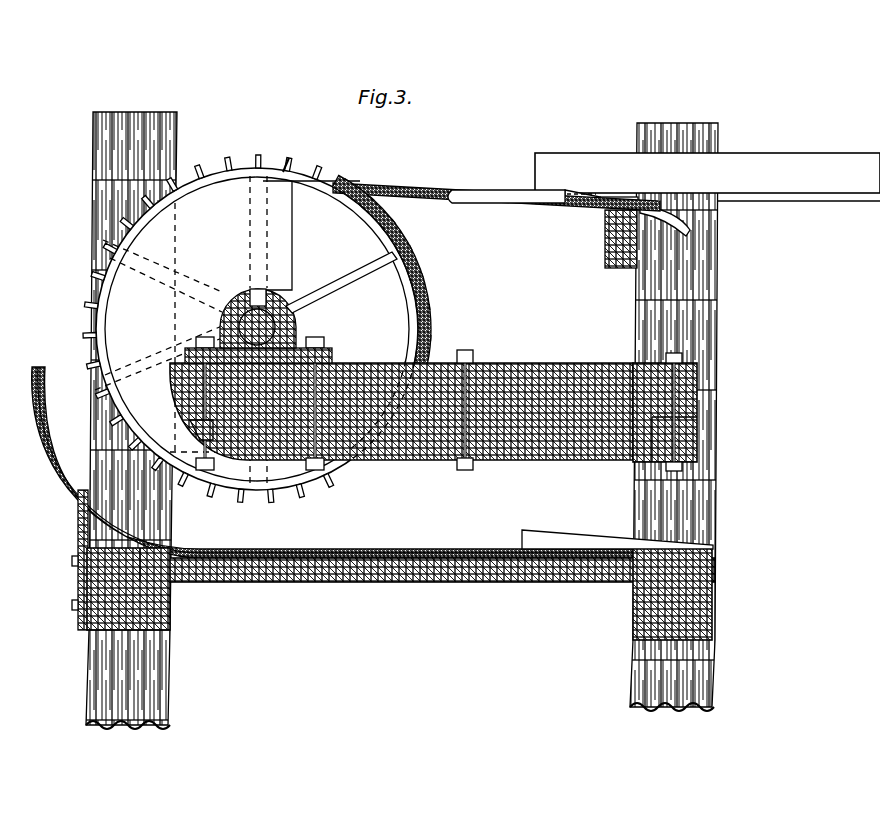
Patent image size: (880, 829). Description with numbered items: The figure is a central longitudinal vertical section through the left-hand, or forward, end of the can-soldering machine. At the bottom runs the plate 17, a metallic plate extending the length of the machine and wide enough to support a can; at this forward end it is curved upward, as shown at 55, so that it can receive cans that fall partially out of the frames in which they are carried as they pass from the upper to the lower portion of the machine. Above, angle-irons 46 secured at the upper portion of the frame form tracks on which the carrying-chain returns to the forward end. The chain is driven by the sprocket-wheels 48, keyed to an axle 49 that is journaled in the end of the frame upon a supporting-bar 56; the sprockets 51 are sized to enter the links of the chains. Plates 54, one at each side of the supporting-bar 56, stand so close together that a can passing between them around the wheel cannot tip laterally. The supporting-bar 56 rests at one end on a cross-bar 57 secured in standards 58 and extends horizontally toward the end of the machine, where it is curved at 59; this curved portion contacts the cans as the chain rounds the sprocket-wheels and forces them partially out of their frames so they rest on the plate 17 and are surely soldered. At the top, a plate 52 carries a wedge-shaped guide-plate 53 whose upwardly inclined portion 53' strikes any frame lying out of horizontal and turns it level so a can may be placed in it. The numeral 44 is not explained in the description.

The plate 17 is at (332, 549).
The rail strip 44 is at (208, 548).
The angle-irons 46 is at (856, 189).
The sprocket-wheels 48 is at (290, 172).
The axle 49 is at (298, 323).
The sprockets 51 is at (424, 280).
The plate 52 is at (477, 207).
The wedge-shaped guide-plate 53 is at (506, 182).
The inclined portion 53' is at (625, 213).
The plates 54 is at (228, 252).
The upwardly curved portion of plate 55 is at (46, 432).
The supporting-bar 56 is at (545, 365).
The cross-bar 57 is at (700, 428).
The standards 58 is at (700, 325).
The curved portion of supporting-bar 59 is at (198, 424).